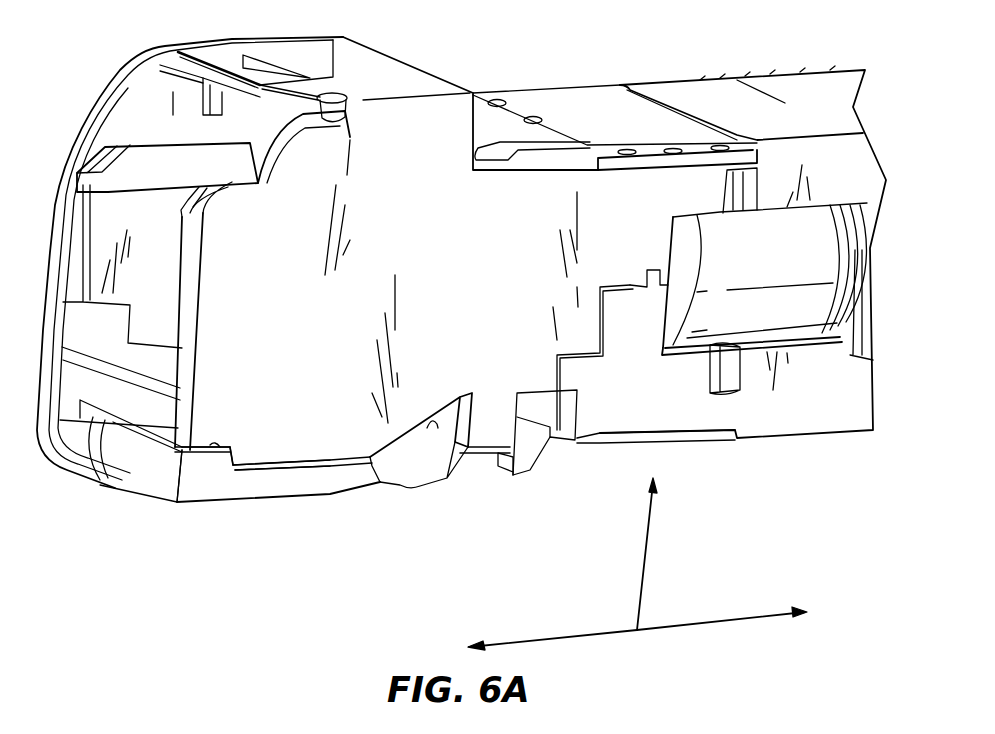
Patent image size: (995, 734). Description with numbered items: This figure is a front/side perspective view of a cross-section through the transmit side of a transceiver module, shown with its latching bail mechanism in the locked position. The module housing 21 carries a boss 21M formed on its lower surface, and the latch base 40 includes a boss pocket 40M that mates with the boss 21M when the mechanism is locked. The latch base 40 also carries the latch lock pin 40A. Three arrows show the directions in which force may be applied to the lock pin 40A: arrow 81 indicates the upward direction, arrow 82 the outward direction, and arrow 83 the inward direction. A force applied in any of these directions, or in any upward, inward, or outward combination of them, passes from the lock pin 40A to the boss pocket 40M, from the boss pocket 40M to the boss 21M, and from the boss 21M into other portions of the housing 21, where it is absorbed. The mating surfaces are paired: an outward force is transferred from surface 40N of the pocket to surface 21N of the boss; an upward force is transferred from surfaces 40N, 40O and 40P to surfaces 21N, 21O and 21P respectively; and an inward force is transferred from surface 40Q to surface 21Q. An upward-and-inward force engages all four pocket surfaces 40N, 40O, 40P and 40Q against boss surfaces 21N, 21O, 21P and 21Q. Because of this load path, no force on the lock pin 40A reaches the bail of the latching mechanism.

The module housing 21 is at (731, 103).
The surface of the boss 21P is at (215, 440).
The surface of the boss 21Q is at (233, 464).
The surface of the boss 21O is at (267, 470).
The boss 21M is at (272, 468).
The surface of the boss 21N is at (417, 420).
The latch base 40 is at (133, 453).
The surface of the boss pocket 40P is at (183, 457).
The surface of the boss pocket 40Q is at (227, 453).
The boss pocket 40M is at (310, 468).
The surface of the boss pocket 40N is at (434, 428).
The surface of the boss pocket 40O is at (372, 458).
The latch lock pin 40A is at (527, 473).
The arrow indicating upward direction 81 is at (653, 538).
The arrow indicating outward direction 82 is at (540, 637).
The arrow indicating inward direction 83 is at (710, 620).